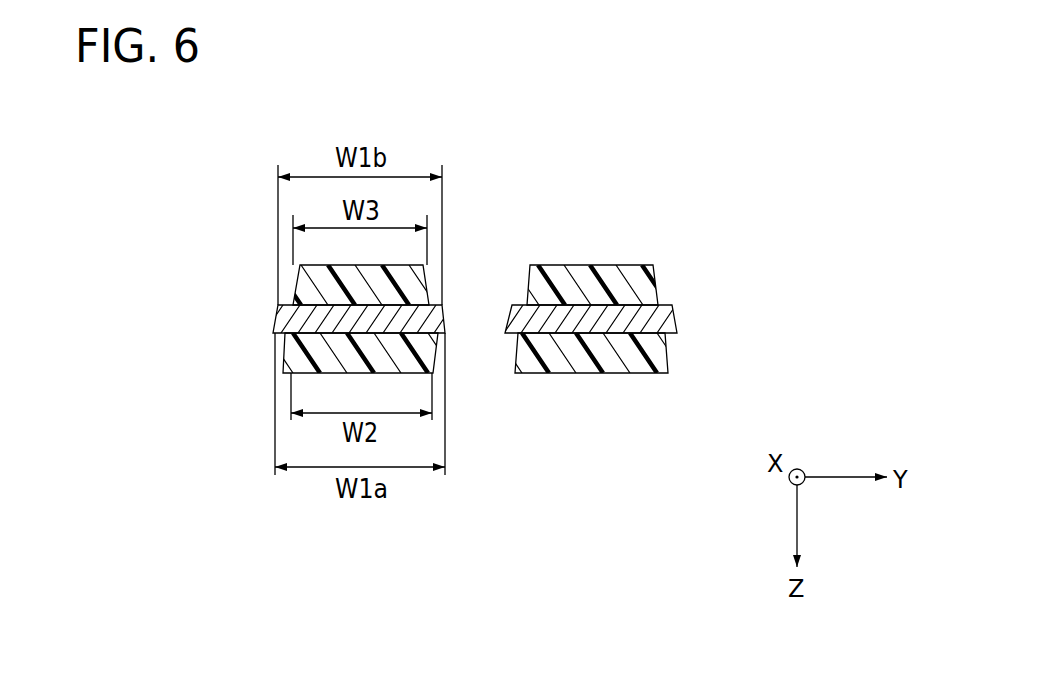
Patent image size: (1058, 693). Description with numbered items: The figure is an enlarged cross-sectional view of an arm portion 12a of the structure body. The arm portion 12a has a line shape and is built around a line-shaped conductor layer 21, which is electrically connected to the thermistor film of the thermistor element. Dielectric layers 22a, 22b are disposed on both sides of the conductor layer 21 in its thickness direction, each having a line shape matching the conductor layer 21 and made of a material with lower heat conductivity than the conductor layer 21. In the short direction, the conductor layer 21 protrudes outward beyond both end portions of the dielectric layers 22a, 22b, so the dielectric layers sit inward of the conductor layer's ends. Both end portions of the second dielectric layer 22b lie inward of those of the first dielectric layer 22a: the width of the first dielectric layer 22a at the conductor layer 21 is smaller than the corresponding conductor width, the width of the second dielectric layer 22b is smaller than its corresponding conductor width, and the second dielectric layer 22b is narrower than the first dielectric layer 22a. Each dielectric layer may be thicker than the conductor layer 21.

The arm portion 12a is at (708, 210).
The conductor layer 21 is at (282, 317).
The first dielectric layer 22a is at (292, 352).
The second dielectric layer 22b is at (297, 288).